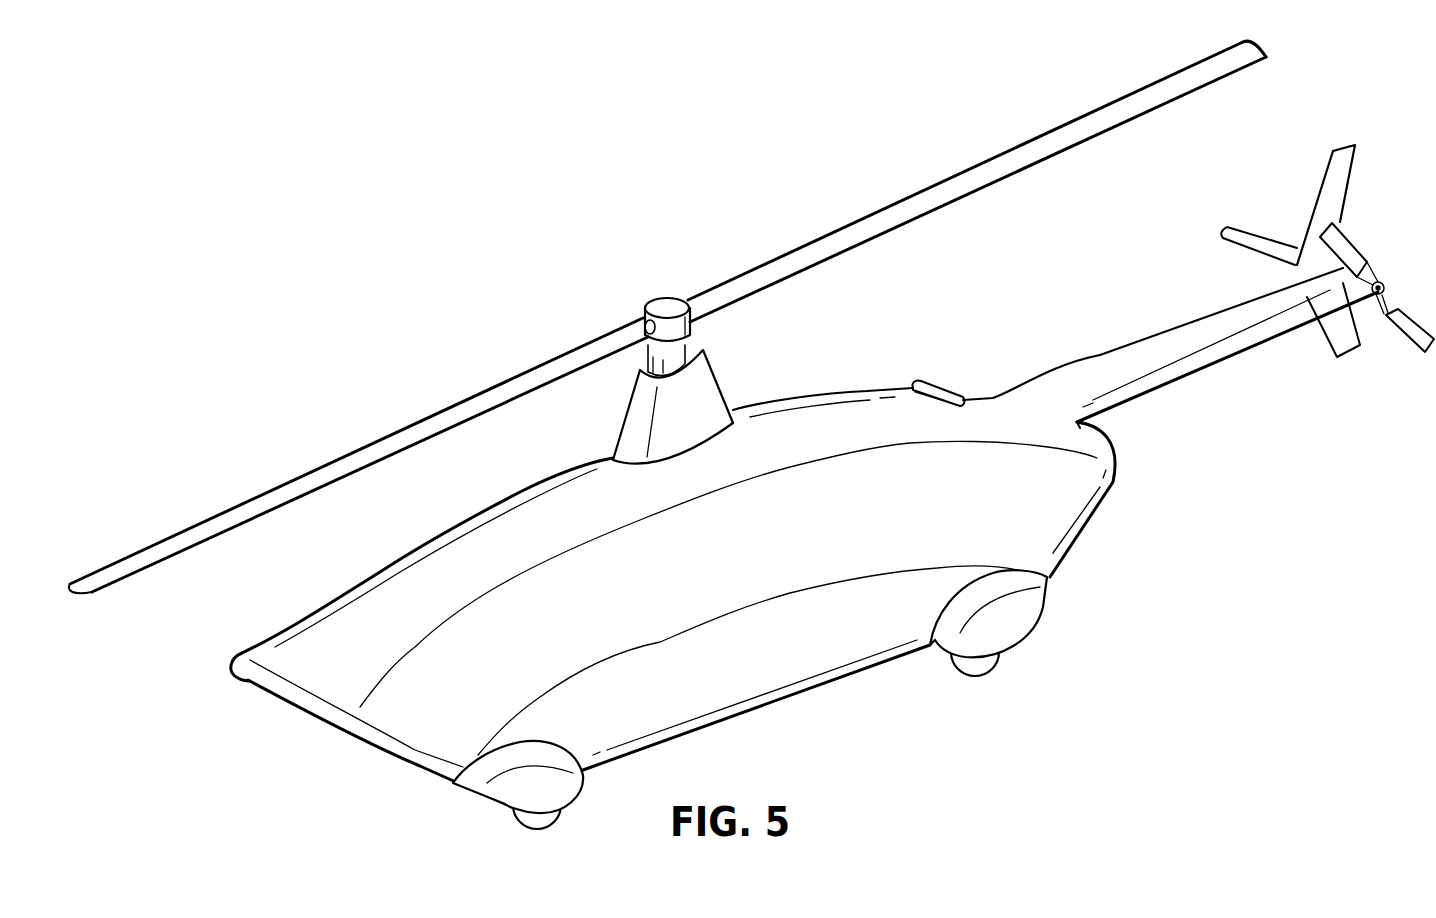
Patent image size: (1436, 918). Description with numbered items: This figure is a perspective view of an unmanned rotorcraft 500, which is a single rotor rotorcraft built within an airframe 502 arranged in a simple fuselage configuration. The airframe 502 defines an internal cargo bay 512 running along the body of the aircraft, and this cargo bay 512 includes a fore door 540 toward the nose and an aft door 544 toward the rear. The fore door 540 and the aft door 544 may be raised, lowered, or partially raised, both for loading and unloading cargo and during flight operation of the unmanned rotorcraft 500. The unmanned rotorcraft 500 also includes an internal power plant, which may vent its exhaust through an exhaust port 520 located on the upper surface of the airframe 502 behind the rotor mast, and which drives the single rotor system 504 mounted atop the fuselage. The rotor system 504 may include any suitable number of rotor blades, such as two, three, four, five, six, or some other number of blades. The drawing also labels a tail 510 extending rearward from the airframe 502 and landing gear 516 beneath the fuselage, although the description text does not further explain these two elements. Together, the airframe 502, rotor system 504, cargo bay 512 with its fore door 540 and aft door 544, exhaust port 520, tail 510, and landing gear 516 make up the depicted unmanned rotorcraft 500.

The unmanned rotorcraft 500 is at (374, 208).
The airframe 502 is at (328, 607).
The rotor system 504 is at (660, 297).
The tail 510 is at (1175, 330).
The cargo bay 512 is at (797, 668).
The landing gear 516 is at (990, 667).
The exhaust port 520 is at (930, 385).
The fore door 540 is at (333, 724).
The aft door 544 is at (1090, 527).